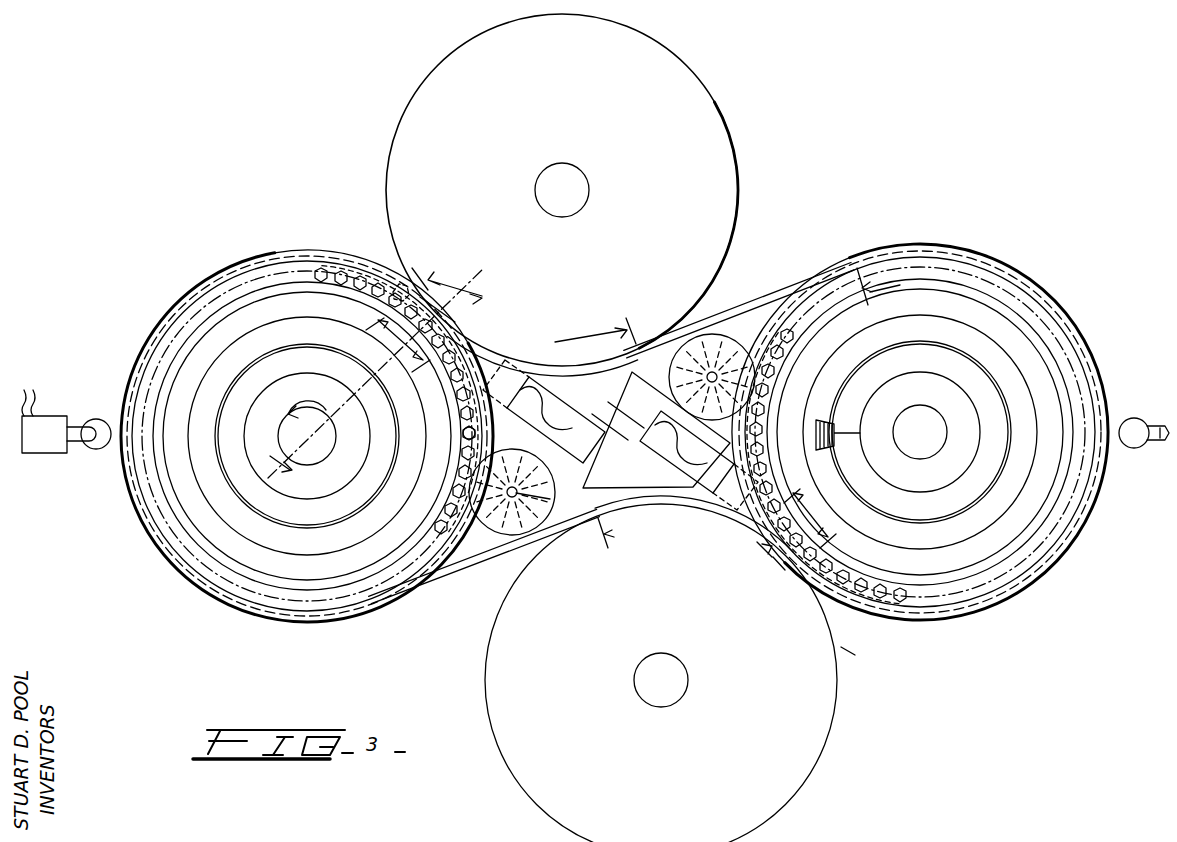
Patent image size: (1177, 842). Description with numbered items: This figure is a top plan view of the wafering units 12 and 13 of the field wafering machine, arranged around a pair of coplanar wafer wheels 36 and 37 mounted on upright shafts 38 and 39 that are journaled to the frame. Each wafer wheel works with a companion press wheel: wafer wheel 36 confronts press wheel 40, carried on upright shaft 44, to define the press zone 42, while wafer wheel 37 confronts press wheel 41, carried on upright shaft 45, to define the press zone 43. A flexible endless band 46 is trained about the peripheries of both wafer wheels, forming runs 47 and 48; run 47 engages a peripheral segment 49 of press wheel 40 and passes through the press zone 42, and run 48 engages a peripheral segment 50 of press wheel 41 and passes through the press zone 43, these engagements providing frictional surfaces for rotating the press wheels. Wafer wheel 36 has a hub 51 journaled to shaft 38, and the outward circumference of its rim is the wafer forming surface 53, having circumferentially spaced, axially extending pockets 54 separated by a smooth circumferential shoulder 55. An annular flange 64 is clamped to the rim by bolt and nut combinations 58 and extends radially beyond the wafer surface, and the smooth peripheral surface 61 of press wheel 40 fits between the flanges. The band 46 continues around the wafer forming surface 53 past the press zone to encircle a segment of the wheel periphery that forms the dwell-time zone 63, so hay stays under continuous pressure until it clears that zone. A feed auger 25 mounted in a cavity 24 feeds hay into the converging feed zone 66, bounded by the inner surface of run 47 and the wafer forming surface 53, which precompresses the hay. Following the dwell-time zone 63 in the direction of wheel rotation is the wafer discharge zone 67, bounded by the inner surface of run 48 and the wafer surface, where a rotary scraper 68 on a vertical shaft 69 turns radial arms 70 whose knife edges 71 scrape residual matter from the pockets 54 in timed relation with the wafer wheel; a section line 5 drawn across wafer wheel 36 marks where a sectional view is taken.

The section line 5- 5 is at (369, 366).
The wafering unit 12 is at (350, 182).
The wafering unit 13 is at (930, 637).
The cavity 24 is at (582, 437).
The feed auger 25 is at (550, 425).
The wafer wheel 36 is at (224, 288).
The wafer wheel 37 is at (973, 275).
The upright shaft 38 is at (310, 458).
The upright shaft 39 is at (918, 437).
The press wheel 40 is at (740, 184).
The press wheel 41 is at (832, 706).
The press zone 42 is at (398, 345).
The press zone 43 is at (810, 518).
The upright shaft 44 is at (582, 197).
The upright shaft 45 is at (676, 692).
The flexible endless band 46 is at (1046, 566).
The run 47 is at (733, 304).
The run 48 is at (434, 576).
The peripheral segment 49 is at (478, 318).
The peripheral segment 50 is at (610, 532).
The hub 51 is at (261, 392).
The wafer forming surface 53 is at (342, 262).
The pockets 54 is at (379, 286).
The circumferential shoulder 55 is at (416, 292).
The bolt and nut combinations 58 is at (466, 432).
The smooth peripheral surface 61 is at (860, 653).
The dwell-time zone 63 is at (344, 565).
The annular flange 64 is at (400, 588).
The feed zone 66 is at (530, 359).
The wafer discharge zone 67 is at (730, 326).
The rotary scraper 68 is at (506, 534).
The vertical shaft 69 is at (554, 495).
The radial arms 70 is at (542, 508).
The knife edges 71 is at (538, 534).